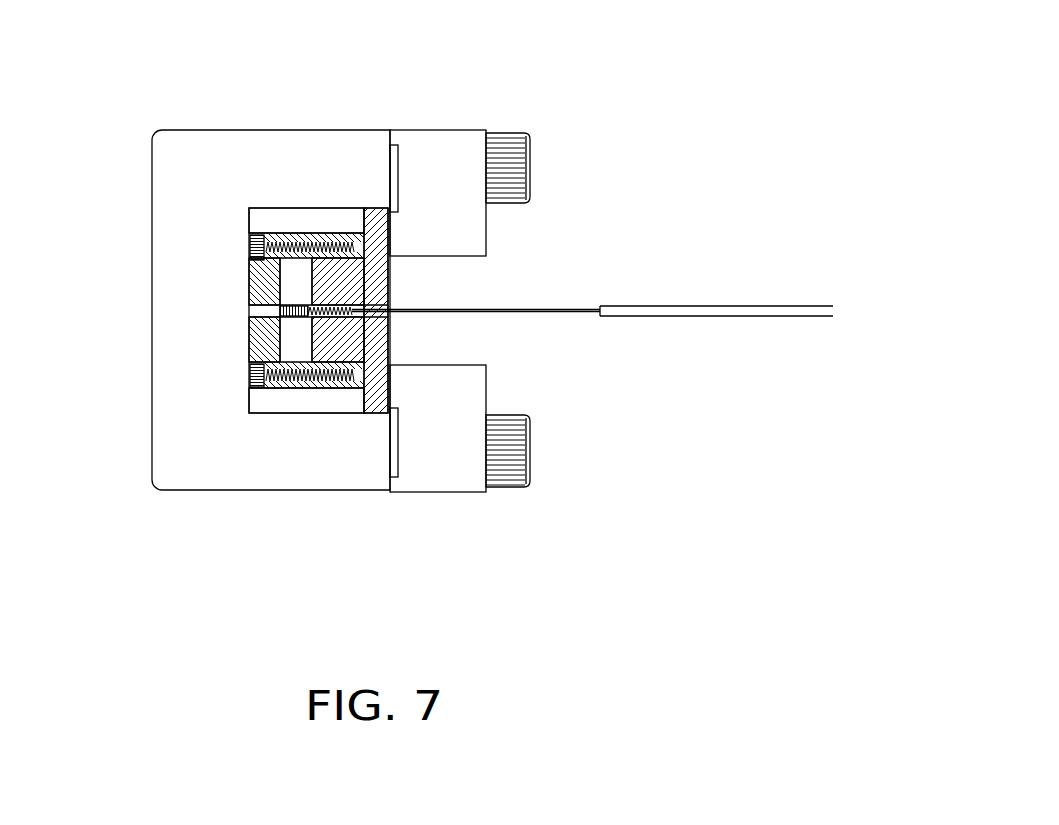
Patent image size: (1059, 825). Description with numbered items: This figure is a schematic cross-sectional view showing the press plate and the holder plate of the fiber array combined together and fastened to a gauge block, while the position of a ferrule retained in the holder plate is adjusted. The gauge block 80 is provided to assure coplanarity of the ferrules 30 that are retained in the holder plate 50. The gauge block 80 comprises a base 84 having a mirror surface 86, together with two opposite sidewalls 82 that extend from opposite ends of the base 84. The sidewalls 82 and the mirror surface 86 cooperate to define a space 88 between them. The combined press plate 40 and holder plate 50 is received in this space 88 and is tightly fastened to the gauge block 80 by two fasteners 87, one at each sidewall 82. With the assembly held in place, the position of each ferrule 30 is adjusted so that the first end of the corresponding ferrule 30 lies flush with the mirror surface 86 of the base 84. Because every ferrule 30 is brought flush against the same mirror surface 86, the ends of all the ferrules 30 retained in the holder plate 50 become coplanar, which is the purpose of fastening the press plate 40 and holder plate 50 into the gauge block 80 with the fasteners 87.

The gauge block 80 is at (348, 113).
The sidewalls 82 is at (253, 452).
The base 84 is at (187, 281).
The mirror surface 86 is at (252, 209).
The fasteners 87 is at (440, 175).
The space 88 is at (345, 398).
The ferrule 30 is at (252, 311).
The press plate 40 is at (390, 280).
The holder plate 50 is at (265, 330).